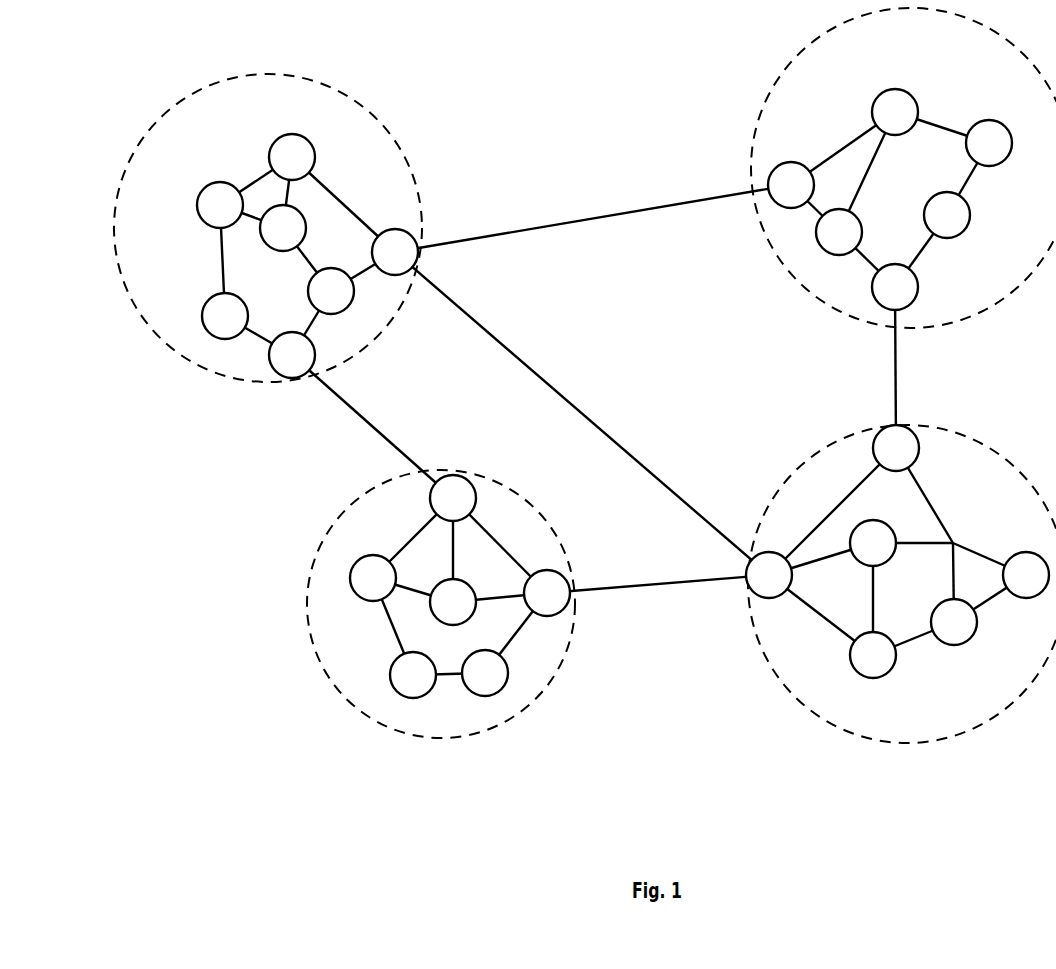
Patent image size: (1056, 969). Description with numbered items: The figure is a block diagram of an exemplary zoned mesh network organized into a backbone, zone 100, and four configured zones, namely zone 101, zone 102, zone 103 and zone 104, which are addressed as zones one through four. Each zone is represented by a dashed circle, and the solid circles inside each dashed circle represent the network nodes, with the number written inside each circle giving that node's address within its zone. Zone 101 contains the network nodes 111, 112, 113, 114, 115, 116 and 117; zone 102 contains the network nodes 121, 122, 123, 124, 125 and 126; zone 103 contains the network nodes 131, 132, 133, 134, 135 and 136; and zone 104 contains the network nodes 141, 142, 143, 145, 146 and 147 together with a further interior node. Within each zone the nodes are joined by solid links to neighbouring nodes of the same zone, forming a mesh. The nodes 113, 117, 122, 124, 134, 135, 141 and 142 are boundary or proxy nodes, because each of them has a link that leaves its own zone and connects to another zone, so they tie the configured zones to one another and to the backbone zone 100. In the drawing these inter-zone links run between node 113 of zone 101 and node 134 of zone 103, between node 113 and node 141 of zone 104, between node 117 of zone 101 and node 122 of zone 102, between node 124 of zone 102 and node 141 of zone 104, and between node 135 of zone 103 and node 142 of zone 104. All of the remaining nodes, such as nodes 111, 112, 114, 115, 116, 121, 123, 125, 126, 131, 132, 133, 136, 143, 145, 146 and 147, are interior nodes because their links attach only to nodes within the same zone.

The backbone zone 100 is at (594, 389).
The configured zone 101 is at (268, 228).
The network node 111 is at (329, 157).
The network node 112 is at (197, 183).
The boundary node 113 is at (384, 231).
The network node 114 is at (269, 251).
The network node 115 is at (191, 293).
The network node 116 is at (331, 273).
The boundary node 117 is at (322, 345).
The configured zone 102 is at (441, 604).
The network node 121 is at (359, 603).
The boundary node 122 is at (408, 509).
The network node 123 is at (467, 616).
The boundary node 124 is at (536, 571).
The network node 125 is at (509, 673).
The network node 126 is at (384, 675).
The configured zone 103 is at (903, 168).
The network node 131 is at (930, 103).
The network node 132 is at (1004, 128).
The network node 133 is at (869, 232).
The boundary node 134 is at (813, 162).
The boundary node 135 is at (937, 283).
The network node 136 is at (987, 211).
The configured zone 104 is at (901, 584).
The boundary node 141 is at (787, 602).
The boundary node 142 is at (942, 459).
The network node 143 is at (893, 566).
The network node 145 is at (1012, 552).
The network node 146 is at (984, 631).
The network node 147 is at (919, 666).